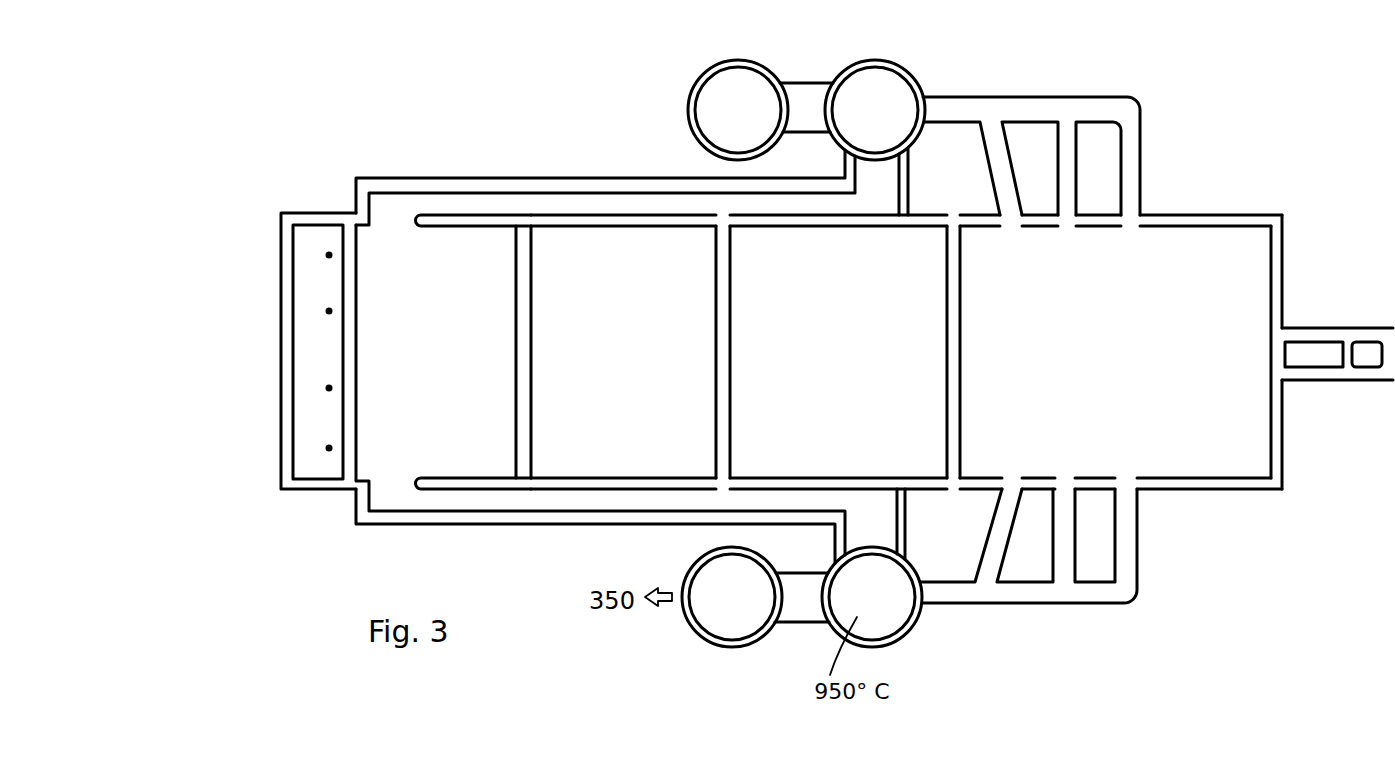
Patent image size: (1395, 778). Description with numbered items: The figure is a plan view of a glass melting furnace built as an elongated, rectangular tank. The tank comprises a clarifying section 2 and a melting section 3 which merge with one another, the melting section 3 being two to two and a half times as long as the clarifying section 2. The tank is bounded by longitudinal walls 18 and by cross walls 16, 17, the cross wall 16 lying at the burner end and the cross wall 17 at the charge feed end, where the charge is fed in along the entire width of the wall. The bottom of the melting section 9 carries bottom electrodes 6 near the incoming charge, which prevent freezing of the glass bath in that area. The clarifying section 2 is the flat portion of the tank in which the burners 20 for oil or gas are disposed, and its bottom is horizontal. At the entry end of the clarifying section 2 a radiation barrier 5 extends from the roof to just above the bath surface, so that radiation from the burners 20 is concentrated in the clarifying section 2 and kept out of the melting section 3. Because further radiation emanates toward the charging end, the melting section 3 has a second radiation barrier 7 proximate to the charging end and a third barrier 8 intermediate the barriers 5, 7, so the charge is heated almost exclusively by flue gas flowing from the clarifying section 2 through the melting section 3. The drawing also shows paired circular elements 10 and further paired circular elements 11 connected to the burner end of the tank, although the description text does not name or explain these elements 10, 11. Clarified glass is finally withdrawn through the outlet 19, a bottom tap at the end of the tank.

The clarifying section 2 is at (1040, 347).
The melting section 3 is at (540, 347).
The radiation barrier 5 is at (947, 288).
The bottom electrodes 6 is at (329, 311).
The second radiation barrier 7 is at (516, 332).
The third barrier 8 is at (716, 323).
The bottom of the melting section 9 is at (766, 347).
The heat exchanger tube 10 is at (893, 90).
The tube 11 is at (758, 90).
The cross wall 16 is at (1283, 280).
The cross wall 17 is at (281, 393).
The longitudinal walls 18 is at (920, 213).
The outlet 19 is at (1313, 357).
The burners 20 is at (1140, 213).